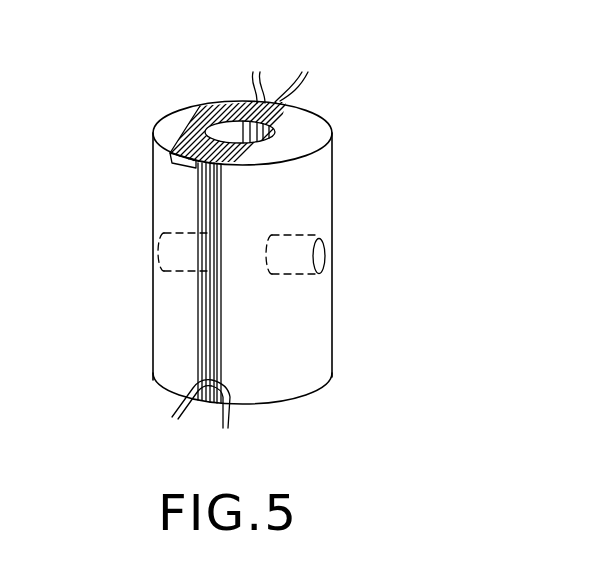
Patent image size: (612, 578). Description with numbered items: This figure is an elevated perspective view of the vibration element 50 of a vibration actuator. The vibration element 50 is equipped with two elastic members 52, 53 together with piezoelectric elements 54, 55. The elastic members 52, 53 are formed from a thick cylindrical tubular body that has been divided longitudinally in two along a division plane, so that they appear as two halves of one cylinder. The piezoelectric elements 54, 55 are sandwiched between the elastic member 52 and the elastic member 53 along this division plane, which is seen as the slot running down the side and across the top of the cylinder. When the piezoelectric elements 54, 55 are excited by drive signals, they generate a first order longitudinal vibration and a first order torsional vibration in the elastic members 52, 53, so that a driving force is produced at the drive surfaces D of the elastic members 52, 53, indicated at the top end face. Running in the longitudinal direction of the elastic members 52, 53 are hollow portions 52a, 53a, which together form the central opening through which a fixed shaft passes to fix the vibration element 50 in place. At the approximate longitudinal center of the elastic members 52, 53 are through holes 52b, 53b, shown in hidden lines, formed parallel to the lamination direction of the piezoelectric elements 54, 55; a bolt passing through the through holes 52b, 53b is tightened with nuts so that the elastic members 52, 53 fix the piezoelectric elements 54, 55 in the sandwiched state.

The vibration element 50 is at (429, 149).
The elastic member 52 is at (158, 176).
The hollow portion 52a is at (216, 127).
The through hole 52b is at (188, 232).
The elastic member 53 is at (332, 186).
The hollow portion 53a is at (274, 122).
The through hole 53b is at (325, 252).
The piezoelectric element 54 is at (223, 250).
The piezoelectric element 55 is at (231, 246).
The drive surface D is at (318, 126).